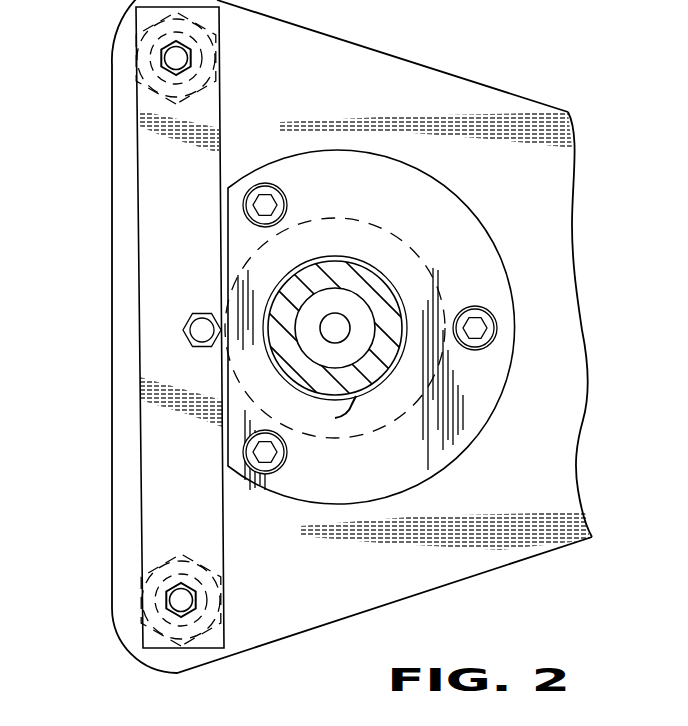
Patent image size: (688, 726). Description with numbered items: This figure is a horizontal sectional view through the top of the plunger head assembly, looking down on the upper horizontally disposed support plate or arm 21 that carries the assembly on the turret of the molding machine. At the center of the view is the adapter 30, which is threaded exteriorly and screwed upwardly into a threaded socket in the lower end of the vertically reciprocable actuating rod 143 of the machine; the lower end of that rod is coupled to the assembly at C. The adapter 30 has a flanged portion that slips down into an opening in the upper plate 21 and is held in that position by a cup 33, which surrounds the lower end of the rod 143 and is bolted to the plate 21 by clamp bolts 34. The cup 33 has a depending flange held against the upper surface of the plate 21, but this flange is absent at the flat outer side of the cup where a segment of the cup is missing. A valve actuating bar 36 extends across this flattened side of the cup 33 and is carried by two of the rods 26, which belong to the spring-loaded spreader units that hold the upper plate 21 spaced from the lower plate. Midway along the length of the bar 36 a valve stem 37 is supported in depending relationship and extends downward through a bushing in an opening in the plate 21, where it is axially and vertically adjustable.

The upper support plate 21 is at (352, 336).
The rod 26 is at (145, 64).
The adapter 30 is at (358, 308).
The cup 33 is at (370, 327).
The clamp bolts 34 is at (494, 328).
The valve actuating bar 36 is at (147, 428).
The valve stem 37 is at (198, 318).
The actuating rod 143 is at (333, 267).
The coupling C is at (334, 415).